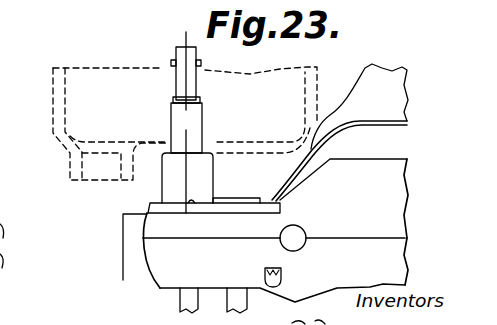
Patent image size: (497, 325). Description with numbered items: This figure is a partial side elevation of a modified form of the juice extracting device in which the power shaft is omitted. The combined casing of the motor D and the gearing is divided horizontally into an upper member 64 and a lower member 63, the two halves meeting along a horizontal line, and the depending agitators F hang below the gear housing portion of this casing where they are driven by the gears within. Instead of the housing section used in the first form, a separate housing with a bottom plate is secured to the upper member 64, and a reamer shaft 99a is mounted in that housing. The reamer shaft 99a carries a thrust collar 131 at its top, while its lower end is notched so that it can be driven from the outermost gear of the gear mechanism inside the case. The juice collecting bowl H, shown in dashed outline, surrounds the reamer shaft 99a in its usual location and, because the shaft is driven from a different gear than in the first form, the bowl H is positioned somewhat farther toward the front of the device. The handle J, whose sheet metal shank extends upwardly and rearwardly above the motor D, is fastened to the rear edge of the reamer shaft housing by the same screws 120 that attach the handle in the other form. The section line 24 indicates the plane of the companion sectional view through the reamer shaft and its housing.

The section line 24 is at (180, 42).
The juice collecting bowl H is at (66, 85).
The reamer shaft 99a is at (178, 81).
The thrust collar 131 is at (197, 100).
The screws 120 is at (269, 199).
The handle J is at (392, 73).
The motor D is at (393, 164).
The upper member of the combined motor and gear case 64 is at (396, 204).
The lower member of the combined motor and gear case 63 is at (390, 258).
The depending agitators F is at (184, 298).